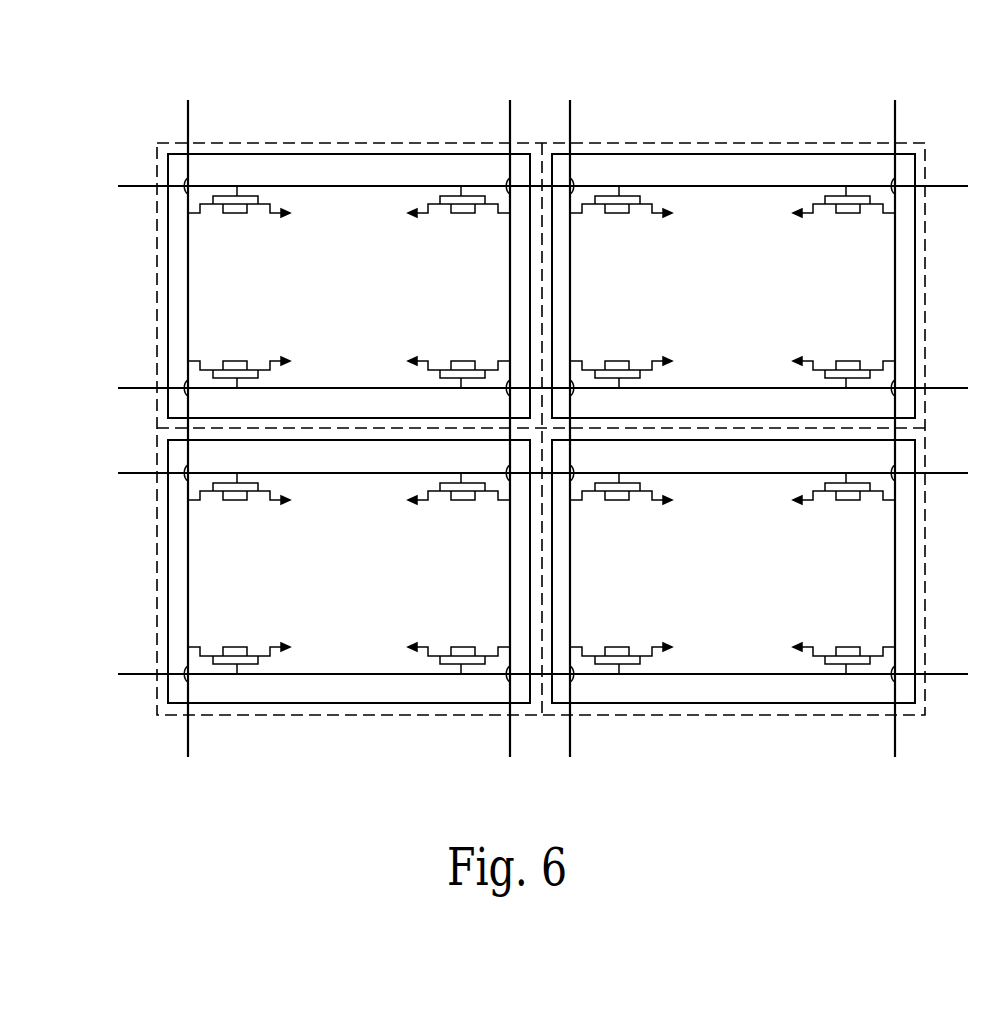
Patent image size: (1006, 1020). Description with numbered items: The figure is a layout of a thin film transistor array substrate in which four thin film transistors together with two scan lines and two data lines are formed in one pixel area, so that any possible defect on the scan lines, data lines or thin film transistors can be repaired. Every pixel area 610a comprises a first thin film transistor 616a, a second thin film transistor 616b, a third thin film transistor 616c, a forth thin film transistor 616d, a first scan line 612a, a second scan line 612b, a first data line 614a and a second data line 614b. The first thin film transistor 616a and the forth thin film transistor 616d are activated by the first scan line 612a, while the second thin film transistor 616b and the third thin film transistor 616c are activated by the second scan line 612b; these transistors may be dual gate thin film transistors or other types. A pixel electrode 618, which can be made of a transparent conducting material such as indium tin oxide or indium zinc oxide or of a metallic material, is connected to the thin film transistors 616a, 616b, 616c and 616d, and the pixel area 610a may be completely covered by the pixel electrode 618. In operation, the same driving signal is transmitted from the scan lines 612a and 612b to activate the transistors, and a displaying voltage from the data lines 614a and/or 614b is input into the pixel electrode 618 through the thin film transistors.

The pixel area 610a is at (337, 140).
The first scan line 612a is at (140, 188).
The second scan line 612b is at (140, 386).
The first data line 614a is at (189, 124).
The second data line 614b is at (509, 128).
The first thin film transistor 616a is at (250, 195).
The second thin film transistor 616b is at (250, 378).
The third thin film transistor 616c is at (453, 379).
The forth thin film transistor 616d is at (458, 196).
The pixel electrode 618 is at (165, 327).